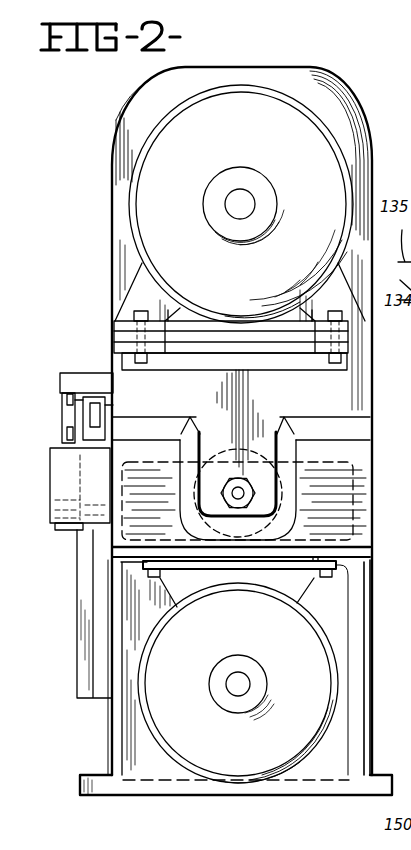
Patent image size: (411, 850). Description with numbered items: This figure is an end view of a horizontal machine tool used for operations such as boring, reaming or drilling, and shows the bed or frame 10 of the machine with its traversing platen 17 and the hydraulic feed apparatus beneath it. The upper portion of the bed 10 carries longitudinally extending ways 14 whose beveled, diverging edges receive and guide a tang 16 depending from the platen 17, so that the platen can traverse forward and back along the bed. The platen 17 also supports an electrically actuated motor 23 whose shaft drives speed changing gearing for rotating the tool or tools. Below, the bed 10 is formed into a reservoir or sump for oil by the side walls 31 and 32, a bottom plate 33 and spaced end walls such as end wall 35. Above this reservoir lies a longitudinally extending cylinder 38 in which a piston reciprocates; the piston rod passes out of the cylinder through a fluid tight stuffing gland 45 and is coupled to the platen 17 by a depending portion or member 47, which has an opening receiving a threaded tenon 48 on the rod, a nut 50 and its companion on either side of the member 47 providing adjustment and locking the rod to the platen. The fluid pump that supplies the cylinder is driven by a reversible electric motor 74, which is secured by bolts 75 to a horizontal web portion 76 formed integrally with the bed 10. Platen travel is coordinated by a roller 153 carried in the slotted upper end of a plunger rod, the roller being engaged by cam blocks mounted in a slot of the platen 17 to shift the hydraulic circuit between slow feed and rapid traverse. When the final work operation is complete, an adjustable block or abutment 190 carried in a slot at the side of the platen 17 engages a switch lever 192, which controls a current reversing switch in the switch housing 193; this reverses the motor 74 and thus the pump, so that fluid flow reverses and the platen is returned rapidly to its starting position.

The bed or frame 10 is at (378, 645).
The ways 14 is at (140, 422).
The tang 16 is at (277, 424).
The platen 17 is at (147, 380).
The electrically actuated motor 23 is at (127, 187).
The side wall 31 is at (108, 722).
The side wall 32 is at (360, 702).
The bottom plate 33 is at (295, 790).
The end wall 35 is at (340, 743).
The cylinder 38 is at (272, 494).
The stuffing gland 45 is at (278, 532).
The depending portion or member 47 is at (200, 460).
The threaded tenon 48 is at (250, 487).
The nut 50 is at (230, 493).
The reversible electric motor 74 is at (322, 630).
The bolts 75 is at (348, 585).
The horizontal web portion 76 is at (335, 560).
The roller 153 is at (88, 413).
The adjustable block or abutment 190 is at (62, 380).
The switch lever 192 is at (64, 413).
The switch housing 193 is at (52, 469).